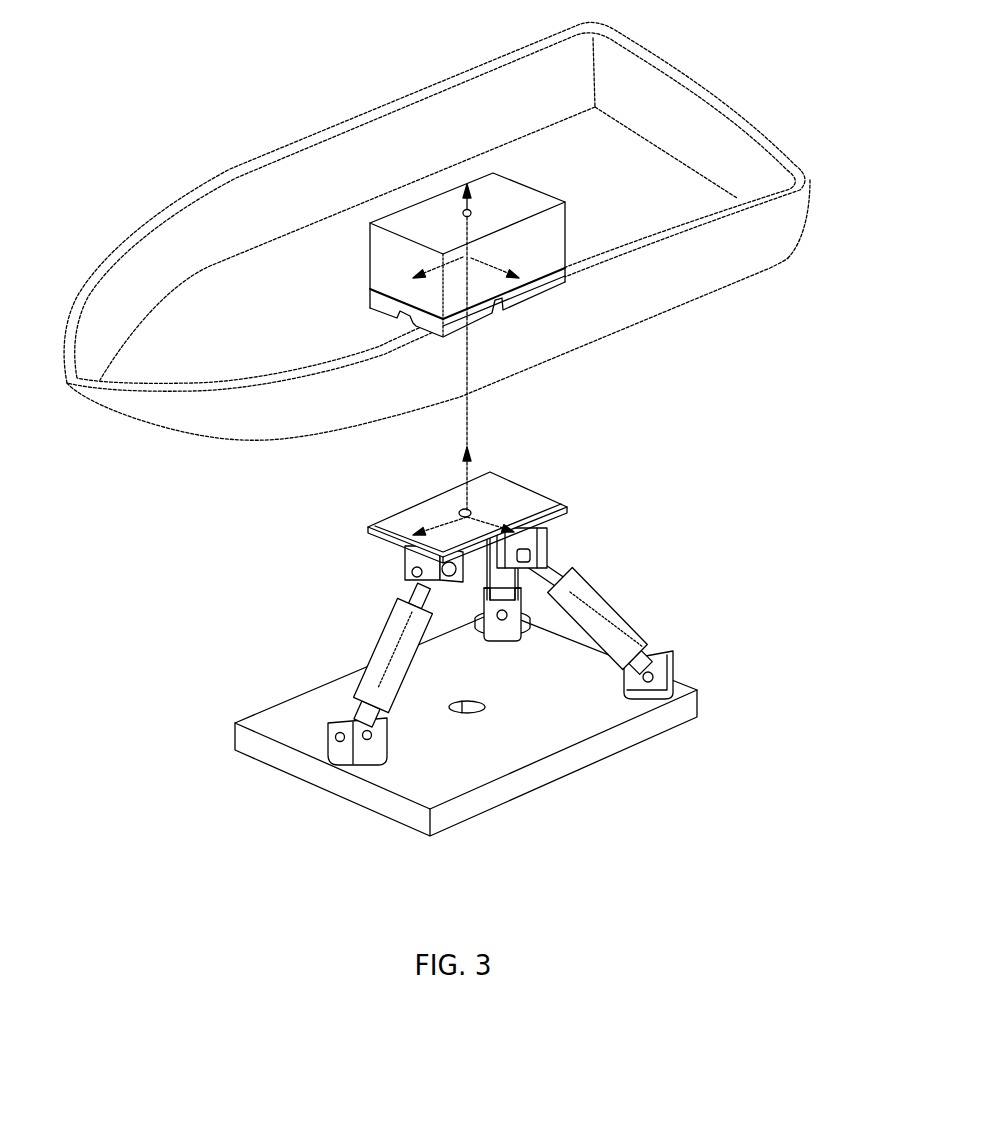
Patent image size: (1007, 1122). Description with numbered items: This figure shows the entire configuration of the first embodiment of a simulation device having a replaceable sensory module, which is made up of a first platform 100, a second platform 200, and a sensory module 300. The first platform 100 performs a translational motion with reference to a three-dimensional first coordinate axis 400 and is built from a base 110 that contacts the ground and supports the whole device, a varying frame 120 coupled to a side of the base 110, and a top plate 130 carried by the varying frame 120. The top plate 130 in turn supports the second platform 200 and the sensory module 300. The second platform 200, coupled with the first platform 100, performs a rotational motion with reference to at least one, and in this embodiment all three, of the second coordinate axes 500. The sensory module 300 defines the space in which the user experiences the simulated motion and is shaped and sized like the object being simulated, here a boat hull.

The first platform 100 is at (502, 643).
The base 110 is at (590, 590).
The varying frame 120 is at (625, 622).
The top plate 130 is at (527, 500).
The second platform 200 is at (490, 172).
The sensory module 300 is at (717, 94).
The first coordinate axis 400 is at (458, 462).
The second coordinate axes 500 is at (463, 238).